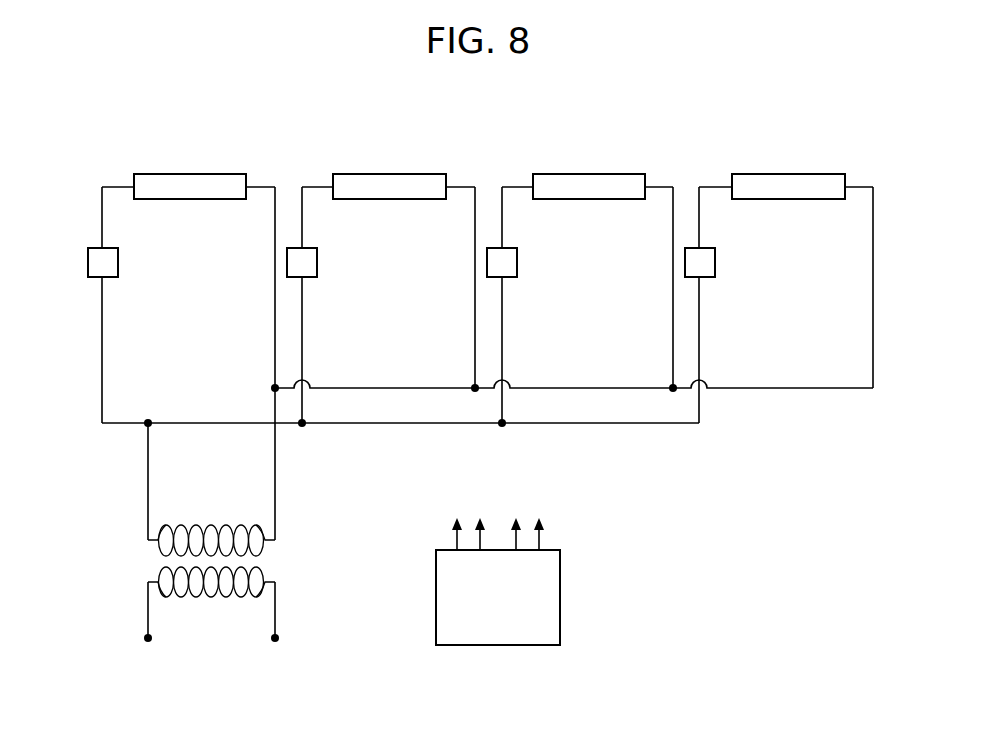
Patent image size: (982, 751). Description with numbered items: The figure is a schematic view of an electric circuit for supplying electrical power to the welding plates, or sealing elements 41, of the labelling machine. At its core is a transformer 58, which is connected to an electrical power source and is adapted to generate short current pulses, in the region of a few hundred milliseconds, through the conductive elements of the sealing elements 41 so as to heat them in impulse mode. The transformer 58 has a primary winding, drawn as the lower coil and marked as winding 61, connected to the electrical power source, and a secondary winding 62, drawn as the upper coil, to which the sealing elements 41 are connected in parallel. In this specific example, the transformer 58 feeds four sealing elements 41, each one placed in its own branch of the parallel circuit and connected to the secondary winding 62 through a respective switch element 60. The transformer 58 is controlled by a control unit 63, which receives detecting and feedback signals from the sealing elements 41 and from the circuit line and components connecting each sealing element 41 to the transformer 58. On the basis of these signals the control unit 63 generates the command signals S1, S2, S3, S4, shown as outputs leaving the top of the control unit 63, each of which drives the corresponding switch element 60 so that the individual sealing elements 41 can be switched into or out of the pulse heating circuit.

The sealing element 41 is at (190, 184).
The switch element 60 is at (92, 263).
The command signal S1 is at (122, 263).
The command signal S2 is at (321, 263).
The command signal S3 is at (521, 263).
The command signal S4 is at (719, 263).
The transformer 58 is at (142, 561).
The primary winding 61 is at (214, 616).
The secondary winding 62 is at (220, 506).
The control unit 63 is at (540, 605).